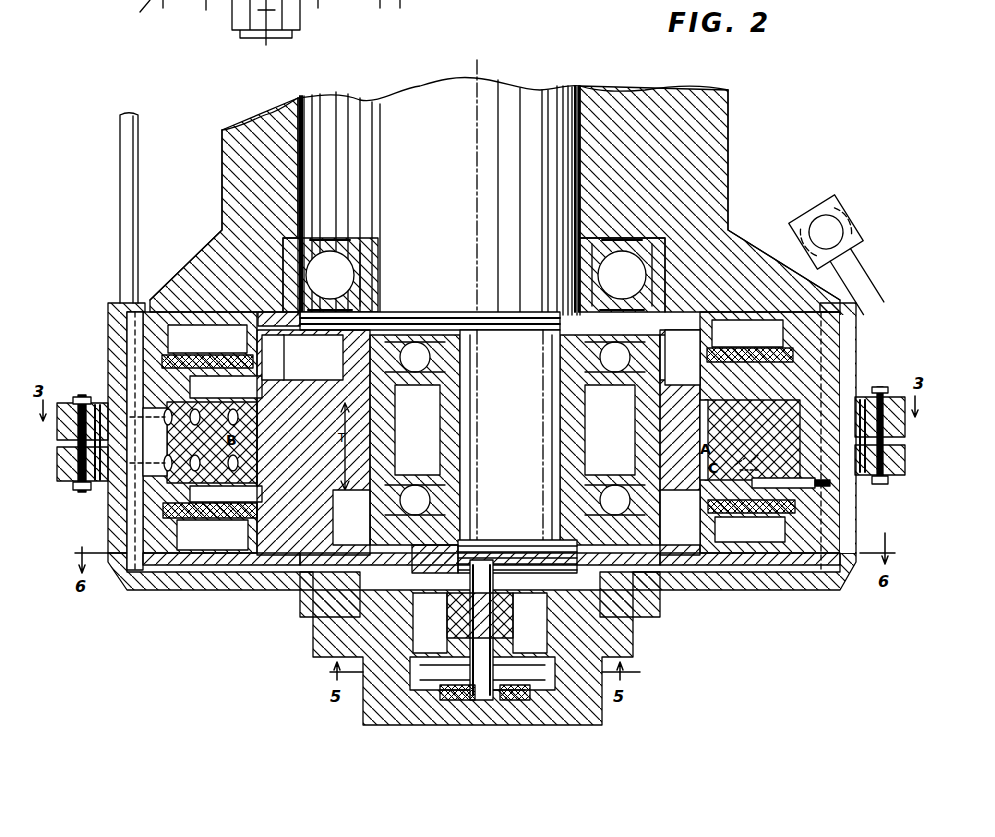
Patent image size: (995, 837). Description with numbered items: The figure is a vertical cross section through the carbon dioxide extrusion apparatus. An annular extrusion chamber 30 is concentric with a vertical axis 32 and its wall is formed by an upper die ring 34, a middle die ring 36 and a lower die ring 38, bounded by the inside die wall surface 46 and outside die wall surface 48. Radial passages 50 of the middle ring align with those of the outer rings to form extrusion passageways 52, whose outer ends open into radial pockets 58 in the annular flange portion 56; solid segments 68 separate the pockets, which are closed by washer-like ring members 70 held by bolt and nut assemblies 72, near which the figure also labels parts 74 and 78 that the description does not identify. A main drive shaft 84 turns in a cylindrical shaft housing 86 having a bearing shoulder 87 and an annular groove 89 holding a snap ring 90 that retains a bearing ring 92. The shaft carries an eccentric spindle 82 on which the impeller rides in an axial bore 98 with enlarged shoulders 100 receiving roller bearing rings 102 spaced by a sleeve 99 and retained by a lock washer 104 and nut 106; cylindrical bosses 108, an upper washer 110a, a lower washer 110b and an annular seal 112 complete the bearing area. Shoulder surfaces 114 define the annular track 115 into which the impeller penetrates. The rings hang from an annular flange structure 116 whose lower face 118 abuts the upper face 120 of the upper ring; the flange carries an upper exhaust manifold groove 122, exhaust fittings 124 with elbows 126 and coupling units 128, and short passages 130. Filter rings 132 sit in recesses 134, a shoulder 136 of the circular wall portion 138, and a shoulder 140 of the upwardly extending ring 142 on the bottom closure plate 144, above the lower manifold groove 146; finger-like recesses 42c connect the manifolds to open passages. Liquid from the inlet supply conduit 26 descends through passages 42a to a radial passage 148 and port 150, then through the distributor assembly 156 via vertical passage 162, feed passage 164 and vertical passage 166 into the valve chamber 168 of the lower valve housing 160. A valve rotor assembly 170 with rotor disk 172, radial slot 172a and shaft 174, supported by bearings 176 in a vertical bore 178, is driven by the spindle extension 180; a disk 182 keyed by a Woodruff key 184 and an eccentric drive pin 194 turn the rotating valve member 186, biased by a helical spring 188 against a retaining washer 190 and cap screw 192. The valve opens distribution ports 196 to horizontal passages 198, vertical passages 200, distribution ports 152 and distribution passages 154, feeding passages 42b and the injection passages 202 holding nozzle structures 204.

The inlet supply conduit 26 is at (120, 230).
The annular extrusion chamber 30 is at (471, 439).
The vertical axis 32 is at (480, 200).
The upper die ring 34 is at (95, 368).
The middle die ring 36 is at (57, 455).
The lower die ring 38 is at (100, 505).
The reduced diameter passage 42a is at (118, 297).
The distribution passage 42b is at (848, 508).
The finger-like recess 42c is at (150, 320).
The inside vertical die wall surface 46 is at (172, 404).
The outside vertical die wall surface 48 is at (103, 400).
The extrusion passage 50 is at (214, 440).
The extrusion passageway 52 is at (487, 437).
The annular flange portion 56 is at (70, 490).
The radial pocket 58 is at (57, 431).
The radial segment 68 is at (189, 15).
The washer-like ring member 70 is at (76, 400).
The bolt and nut assembly 72 is at (862, 388).
The spacer 74 is at (70, 410).
The sleeve 78 is at (484, 432).
The eccentric spindle 82 is at (510, 437).
The main drive shaft 84 is at (590, 181).
The cylindrical shaft housing 86 is at (725, 128).
The bearing shoulder 87 is at (316, 240).
The internal annular groove 89 is at (290, 272).
The snap ring 90 is at (668, 268).
The bearing ring 92 is at (612, 235).
The axial center bore 98 is at (610, 440).
The sleeve 99 is at (415, 440).
The enlarged shoulder 100 is at (534, 428).
The roller bearing ring 102 is at (460, 362).
The lock washer 104 is at (468, 545).
The nut 106 is at (433, 560).
The cylindrical boss 108 is at (481, 431).
The upper washer 110a is at (425, 312).
The lower washer 110b is at (410, 556).
The annular seal 112 is at (398, 312).
The horizontal shoulder surface 114 is at (457, 441).
The annular groove or track 115 is at (478, 442).
The annular flange structure 116 is at (208, 252).
The lower annular face 118 is at (868, 328).
The upper face 120 is at (108, 334).
The upper exhaust manifold groove 122 is at (268, 325).
The exhaust fitting 124 is at (790, 250).
The elbow 126 is at (830, 204).
The coupling unit 128 is at (848, 218).
The short passage 130 is at (750, 341).
The annular filter ring 132 is at (208, 437).
The annular recess or shoulder 134 is at (168, 520).
The shoulder 136 is at (248, 356).
The circular wall portion 138 is at (262, 388).
The annular shoulder 140 is at (491, 440).
The upwardly extending annular ring 142 is at (700, 480).
The bottom closure plate 144 is at (842, 588).
The lower exhaust manifold groove 146 is at (195, 565).
The radial passage 148 is at (222, 588).
The port 150 is at (285, 572).
The distribution port 152 is at (655, 590).
The distribution passage 154 is at (768, 588).
The distributor assembly 156 is at (620, 738).
The lower valve housing 160 is at (502, 715).
The vertical passage 162 is at (312, 590).
The horizontal feed passage 164 is at (370, 622).
The vertical passage 166 is at (375, 640).
The annular valve chamber 168 is at (570, 700).
The valve rotor assembly 170 is at (493, 545).
The upper rotor disk 172 is at (420, 578).
The radial slot 172a is at (552, 528).
The valve rotor shaft 174 is at (489, 615).
The bearing 176 is at (400, 606).
The vertical bore 178 is at (530, 636).
The spindle extension 180 is at (520, 540).
The disk 182 is at (430, 712).
The Woodruff key 184 is at (487, 705).
The rotating valve member 186 is at (600, 712).
The helical spring 188 is at (520, 705).
The retaining washer 190 is at (445, 705).
The cap screw 192 is at (460, 720).
The eccentric drive pin 194 is at (540, 700).
The distribution port 196 is at (570, 636).
The horizontal passage 198 is at (575, 620).
The vertical passage 200 is at (640, 598).
The injection passage 202 is at (751, 521).
The injection nozzle structure 204 is at (752, 484).